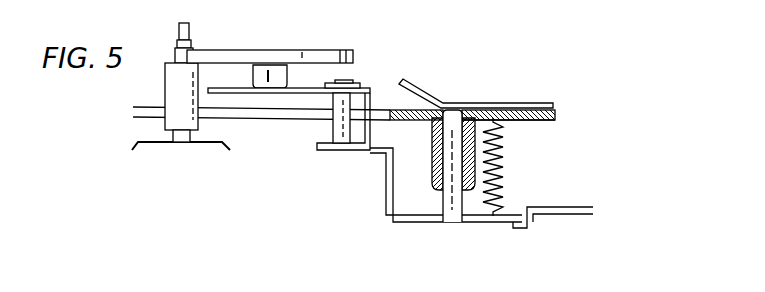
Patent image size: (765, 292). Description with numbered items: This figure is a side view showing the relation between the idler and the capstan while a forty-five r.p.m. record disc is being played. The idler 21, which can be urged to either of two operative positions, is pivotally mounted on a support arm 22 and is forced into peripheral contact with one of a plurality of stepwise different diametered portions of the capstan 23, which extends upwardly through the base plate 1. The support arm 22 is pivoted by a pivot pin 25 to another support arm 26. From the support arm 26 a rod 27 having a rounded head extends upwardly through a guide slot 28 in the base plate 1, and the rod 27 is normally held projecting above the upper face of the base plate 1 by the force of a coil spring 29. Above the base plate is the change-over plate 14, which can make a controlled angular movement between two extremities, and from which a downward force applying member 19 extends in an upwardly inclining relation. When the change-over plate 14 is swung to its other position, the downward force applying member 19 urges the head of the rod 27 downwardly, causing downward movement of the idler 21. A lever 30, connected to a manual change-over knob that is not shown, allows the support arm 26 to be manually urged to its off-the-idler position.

The base plate 1 is at (534, 121).
The change-over plate 14 is at (518, 110).
The downward force applying member 19 is at (432, 96).
The idler 21 is at (328, 50).
The support arm 22 is at (264, 93).
The capstan 23 is at (189, 31).
The pivot pin 25 is at (342, 140).
The support arm 26 is at (392, 221).
The rod 27 is at (450, 215).
The guide slot 28 is at (432, 162).
The coil spring 29 is at (503, 166).
The lever 30 is at (551, 214).